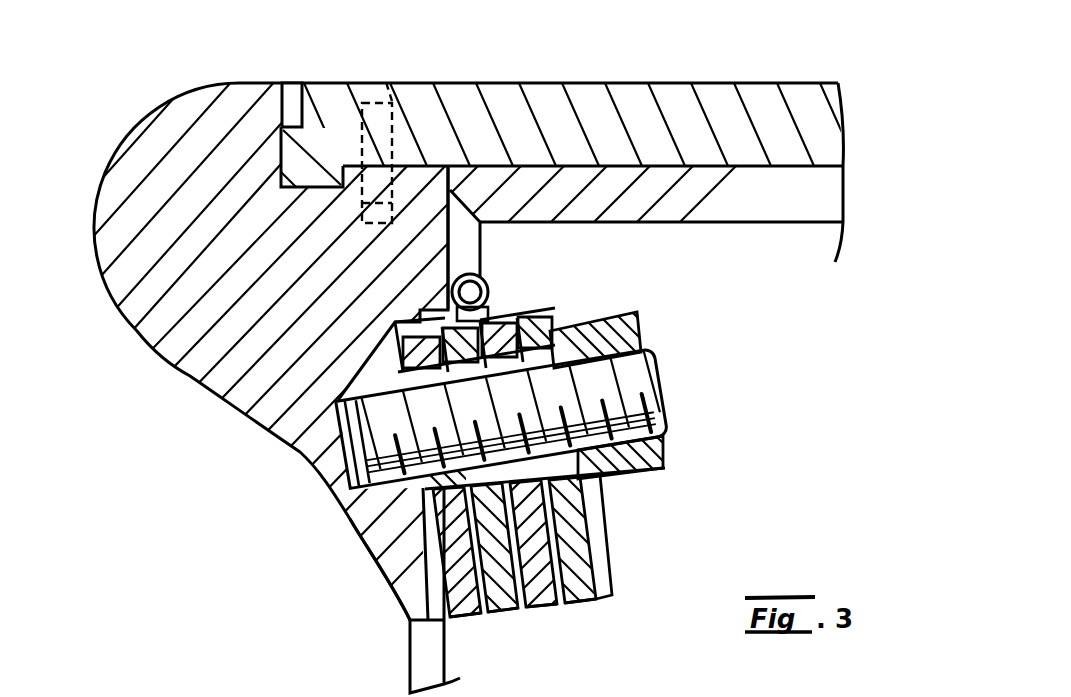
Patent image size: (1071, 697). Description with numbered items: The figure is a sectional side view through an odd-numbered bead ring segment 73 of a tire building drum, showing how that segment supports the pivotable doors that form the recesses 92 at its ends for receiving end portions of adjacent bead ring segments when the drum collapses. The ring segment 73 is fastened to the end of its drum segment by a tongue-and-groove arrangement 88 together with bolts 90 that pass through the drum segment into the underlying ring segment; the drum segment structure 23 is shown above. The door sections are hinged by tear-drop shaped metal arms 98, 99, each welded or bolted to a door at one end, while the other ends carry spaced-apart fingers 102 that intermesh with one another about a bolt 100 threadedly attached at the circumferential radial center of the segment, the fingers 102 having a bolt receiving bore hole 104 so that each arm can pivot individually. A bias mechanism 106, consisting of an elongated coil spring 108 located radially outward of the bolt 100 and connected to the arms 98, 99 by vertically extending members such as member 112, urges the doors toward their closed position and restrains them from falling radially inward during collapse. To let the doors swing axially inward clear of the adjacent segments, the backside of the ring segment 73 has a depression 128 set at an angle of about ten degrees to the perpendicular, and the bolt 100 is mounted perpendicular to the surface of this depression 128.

The plate 23 is at (535, 95).
The odd-numbered bead ring segment 73 is at (138, 209).
The tongue-and-groove arrangement 88 is at (290, 126).
The bolts 90 is at (386, 82).
The recesses 92 is at (418, 542).
The arm 98 is at (537, 514).
The arm 99 is at (541, 603).
The bolt 100 is at (640, 385).
The fingers 102 is at (604, 566).
The bolt receiving bore hole 104 is at (551, 332).
The bias mechanism 106 is at (498, 276).
The coil spring 108 is at (490, 287).
The vertically extending member 112 is at (432, 325).
The depression 128 is at (417, 310).